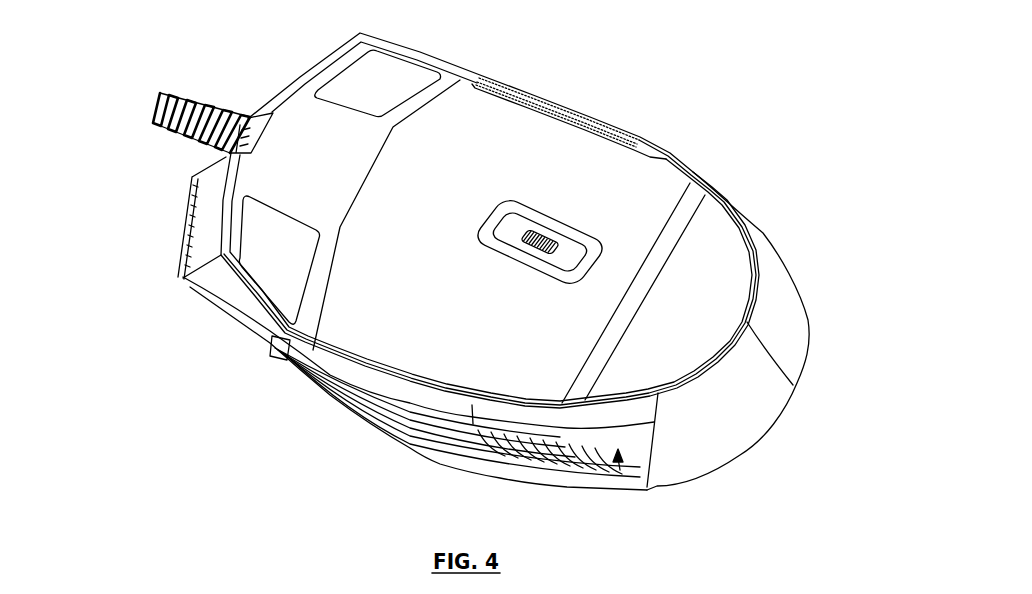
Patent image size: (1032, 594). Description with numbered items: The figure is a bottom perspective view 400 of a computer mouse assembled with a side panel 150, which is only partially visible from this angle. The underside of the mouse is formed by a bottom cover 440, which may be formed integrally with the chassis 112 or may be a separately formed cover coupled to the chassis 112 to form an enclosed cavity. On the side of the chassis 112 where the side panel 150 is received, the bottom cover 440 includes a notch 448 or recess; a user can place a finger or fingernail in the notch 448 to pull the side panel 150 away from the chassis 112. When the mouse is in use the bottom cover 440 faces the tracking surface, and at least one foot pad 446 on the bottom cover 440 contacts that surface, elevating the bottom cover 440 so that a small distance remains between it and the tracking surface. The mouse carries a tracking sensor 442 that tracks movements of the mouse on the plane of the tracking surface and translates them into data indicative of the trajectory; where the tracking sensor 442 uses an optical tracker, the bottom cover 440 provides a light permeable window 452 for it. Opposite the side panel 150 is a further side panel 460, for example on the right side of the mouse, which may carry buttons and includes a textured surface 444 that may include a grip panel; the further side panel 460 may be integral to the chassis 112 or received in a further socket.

The bottom perspective view 400 is at (802, 50).
The chassis 112 is at (702, 440).
The side panel 150 is at (763, 233).
The bottom cover 440 is at (675, 181).
The tracking sensor 442 is at (533, 250).
The textured surface 444 is at (417, 445).
The foot pad 446 is at (405, 70).
The notch 448 is at (563, 113).
The light permeable window 452 is at (523, 220).
The further side panel 460 is at (620, 470).